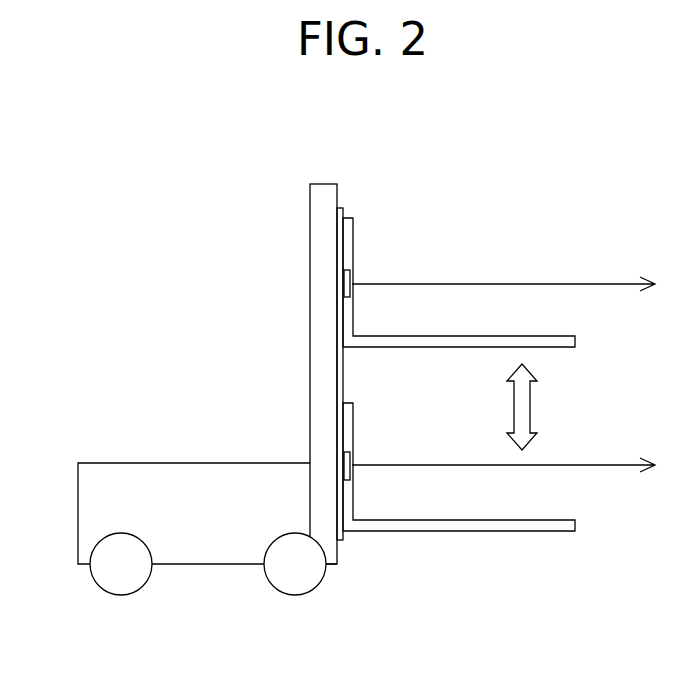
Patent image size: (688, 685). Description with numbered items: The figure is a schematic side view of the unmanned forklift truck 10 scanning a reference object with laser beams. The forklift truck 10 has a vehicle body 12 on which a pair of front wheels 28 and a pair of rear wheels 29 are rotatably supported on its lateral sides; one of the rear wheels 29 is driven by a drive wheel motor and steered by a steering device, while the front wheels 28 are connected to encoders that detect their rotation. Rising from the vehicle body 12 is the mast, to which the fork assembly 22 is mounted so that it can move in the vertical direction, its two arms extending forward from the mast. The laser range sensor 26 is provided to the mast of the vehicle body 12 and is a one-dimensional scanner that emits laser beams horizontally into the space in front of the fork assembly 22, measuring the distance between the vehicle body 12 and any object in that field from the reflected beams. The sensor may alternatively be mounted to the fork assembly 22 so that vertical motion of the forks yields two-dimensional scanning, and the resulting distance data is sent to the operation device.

The unmanned forklift truck 10 is at (80, 207).
The vehicle body 12 is at (98, 477).
The fork assembly 22 is at (457, 525).
The laser range sensor 26 is at (403, 460).
The front wheels 28 is at (293, 578).
The rear wheels 29 is at (120, 578).